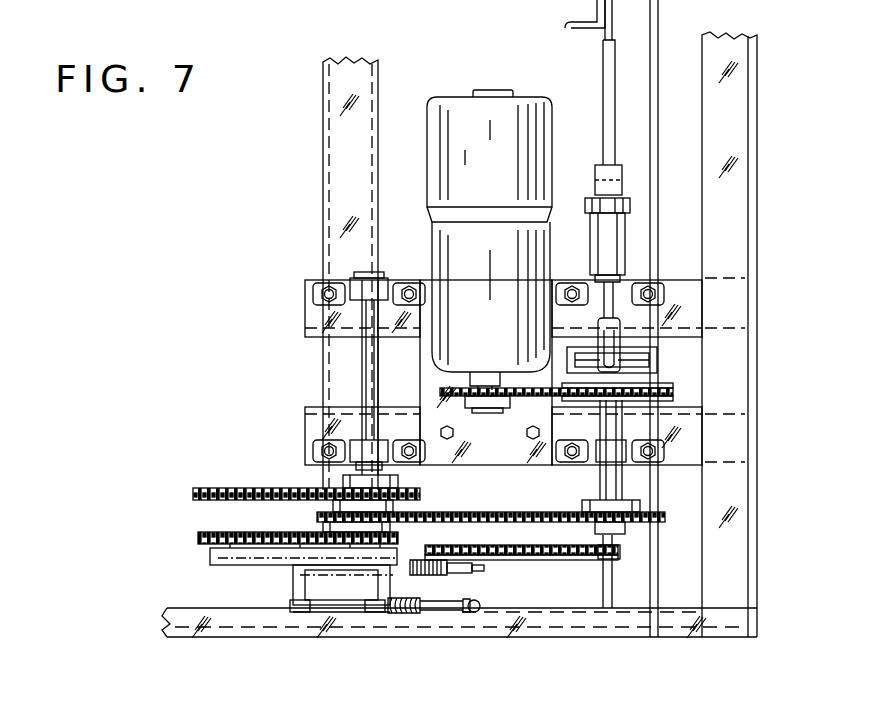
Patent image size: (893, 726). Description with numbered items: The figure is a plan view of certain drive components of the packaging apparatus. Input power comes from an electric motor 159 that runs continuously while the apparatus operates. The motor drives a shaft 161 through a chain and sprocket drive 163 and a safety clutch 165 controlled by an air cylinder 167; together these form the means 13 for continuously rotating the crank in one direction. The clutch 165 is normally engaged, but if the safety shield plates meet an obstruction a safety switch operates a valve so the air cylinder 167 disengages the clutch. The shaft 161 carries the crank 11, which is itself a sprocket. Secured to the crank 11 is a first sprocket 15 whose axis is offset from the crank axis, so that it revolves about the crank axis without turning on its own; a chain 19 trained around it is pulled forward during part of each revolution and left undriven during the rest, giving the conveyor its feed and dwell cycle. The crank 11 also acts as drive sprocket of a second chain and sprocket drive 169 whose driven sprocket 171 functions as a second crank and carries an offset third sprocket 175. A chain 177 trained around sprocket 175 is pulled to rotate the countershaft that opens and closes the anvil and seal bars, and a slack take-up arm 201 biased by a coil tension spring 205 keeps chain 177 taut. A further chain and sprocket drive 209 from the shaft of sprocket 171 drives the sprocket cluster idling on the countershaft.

The electric motor 159 is at (440, 95).
The chain and sprocket drive 163 is at (527, 405).
The means for continuously rotating the crank 13 is at (690, 392).
The air cylinder 167 is at (630, 240).
The safety clutch 165 is at (657, 370).
The shaft 161 is at (622, 420).
The crank 11 is at (640, 503).
The second chain and sprocket drive 169 is at (503, 510).
The driven sprocket 171 is at (410, 505).
The chain and sprocket drive 209 is at (218, 487).
The chain 177 is at (208, 530).
The sprocket 175 is at (305, 528).
The chain 19 is at (548, 555).
The first sprocket 15 is at (586, 558).
The coil tension spring 205 is at (420, 620).
The take-up arm 201 is at (475, 605).